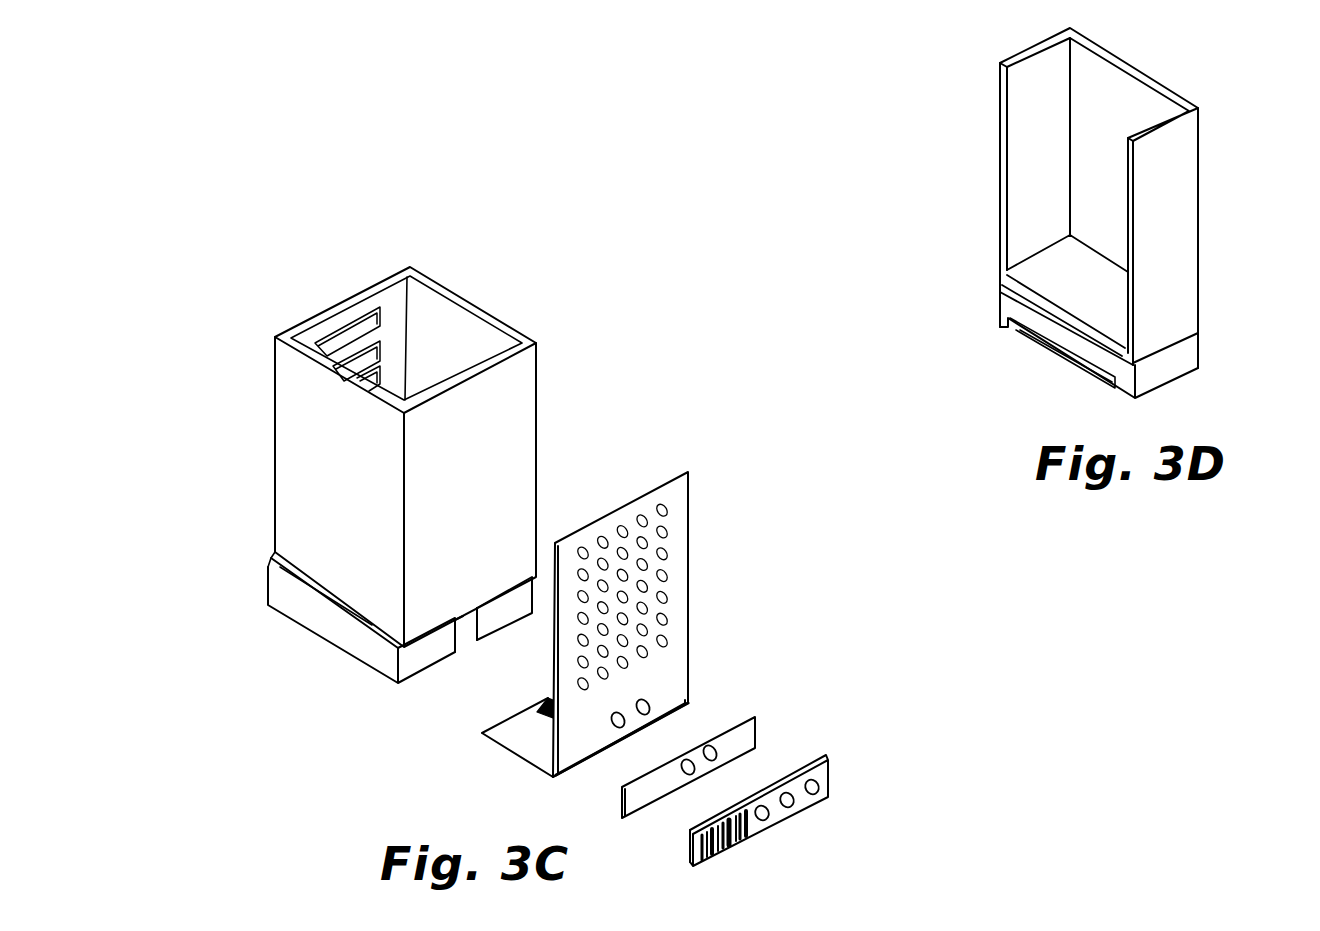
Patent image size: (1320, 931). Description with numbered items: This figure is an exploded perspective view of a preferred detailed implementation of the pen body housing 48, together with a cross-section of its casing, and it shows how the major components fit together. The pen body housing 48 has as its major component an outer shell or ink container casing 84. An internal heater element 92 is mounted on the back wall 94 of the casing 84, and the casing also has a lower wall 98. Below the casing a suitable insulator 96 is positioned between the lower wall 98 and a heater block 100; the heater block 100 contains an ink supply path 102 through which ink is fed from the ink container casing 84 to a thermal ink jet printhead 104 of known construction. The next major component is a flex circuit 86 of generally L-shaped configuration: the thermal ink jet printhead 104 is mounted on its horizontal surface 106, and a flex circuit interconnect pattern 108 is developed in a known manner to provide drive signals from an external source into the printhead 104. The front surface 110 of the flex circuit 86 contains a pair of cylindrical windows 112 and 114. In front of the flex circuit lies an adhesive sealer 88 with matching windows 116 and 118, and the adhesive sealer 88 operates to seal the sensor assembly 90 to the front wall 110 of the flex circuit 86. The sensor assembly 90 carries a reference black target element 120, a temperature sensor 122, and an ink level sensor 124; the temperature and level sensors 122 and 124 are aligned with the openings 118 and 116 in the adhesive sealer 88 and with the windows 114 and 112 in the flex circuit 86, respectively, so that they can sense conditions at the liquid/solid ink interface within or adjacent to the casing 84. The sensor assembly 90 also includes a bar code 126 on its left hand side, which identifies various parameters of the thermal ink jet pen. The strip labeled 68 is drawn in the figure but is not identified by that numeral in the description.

In FIG. 3C, the pen body housing 48 is at (351, 281).
In FIG. 3C, the outer shell or casing 84 is at (538, 378).
In FIG. 3C, the back wall 94 is at (396, 294).
In FIG. 3D, the back wall 94 is at (1022, 145).
In FIG. 3C, the internal heater element 92 is at (332, 333).
In FIG. 3C, the insulator 96 is at (277, 565).
In FIG. 3C, the heater block 100 is at (380, 655).
In FIG. 3C, the ink supply path 102 is at (463, 642).
In FIG. 3C, the thermal ink jet printhead 104 is at (527, 718).
In FIG. 3C, the horizontal surface 106 is at (521, 745).
In FIG. 3C, the flex circuit 86 is at (688, 474).
In FIG. 3C, the front surface 110 is at (673, 660).
In FIG. 3C, the flex circuit interconnect pattern 108 is at (663, 577).
In FIG. 3C, the cylindrical window 112 is at (616, 730).
In FIG. 3C, the cylindrical window 114 is at (650, 705).
In FIG. 3C, the adhesive sealer 88 is at (757, 716).
In FIG. 3C, the window 116 is at (688, 775).
In FIG. 3C, the window 118 is at (710, 747).
In FIG. 3C, the sensor label strip 68 is at (762, 782).
In FIG. 3C, the sensor assembly 90 is at (691, 832).
In FIG. 3C, the reference black target element 120 is at (819, 786).
In FIG. 3C, the temperature sensor 122 is at (793, 803).
In FIG. 3C, the ink level sensor 124 is at (768, 815).
In FIG. 3C, the bar code 126 is at (733, 848).
In FIG. 3D, the lower wall 98 is at (1035, 270).